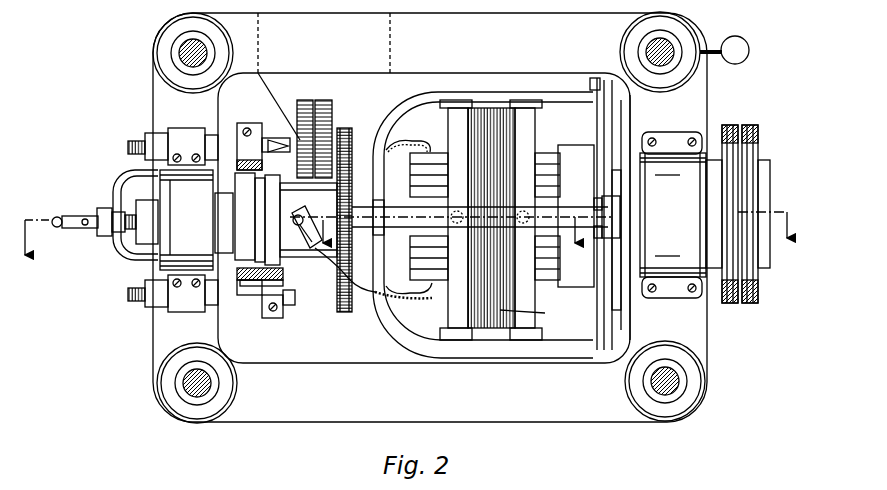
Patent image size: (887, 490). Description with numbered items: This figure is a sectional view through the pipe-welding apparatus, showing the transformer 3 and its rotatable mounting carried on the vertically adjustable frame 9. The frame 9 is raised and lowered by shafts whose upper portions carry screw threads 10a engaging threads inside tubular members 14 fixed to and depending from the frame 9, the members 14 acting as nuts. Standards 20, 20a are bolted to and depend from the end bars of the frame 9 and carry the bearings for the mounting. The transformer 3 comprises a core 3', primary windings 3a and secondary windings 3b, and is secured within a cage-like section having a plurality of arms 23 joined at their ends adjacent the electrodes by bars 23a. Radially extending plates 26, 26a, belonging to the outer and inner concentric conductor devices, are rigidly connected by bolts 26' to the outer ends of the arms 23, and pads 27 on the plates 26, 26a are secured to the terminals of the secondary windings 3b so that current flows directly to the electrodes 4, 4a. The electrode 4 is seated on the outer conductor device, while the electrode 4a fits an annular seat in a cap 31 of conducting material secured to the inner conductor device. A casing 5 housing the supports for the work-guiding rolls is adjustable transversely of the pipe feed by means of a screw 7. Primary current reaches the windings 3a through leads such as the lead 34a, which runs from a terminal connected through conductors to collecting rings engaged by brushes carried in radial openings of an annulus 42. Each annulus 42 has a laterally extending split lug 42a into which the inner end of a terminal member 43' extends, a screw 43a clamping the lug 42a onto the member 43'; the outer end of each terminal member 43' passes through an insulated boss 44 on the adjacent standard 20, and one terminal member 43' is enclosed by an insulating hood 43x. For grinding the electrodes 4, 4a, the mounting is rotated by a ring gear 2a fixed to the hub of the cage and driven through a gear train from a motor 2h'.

The frame 9 is at (520, 422).
The screw threads 10a is at (186, 50).
The tubular members 14 is at (212, 50).
The arms 23 is at (492, 90).
The bars 23a is at (603, 355).
The transformer 3 is at (517, 220).
The core 3' is at (532, 314).
The primary windings 3a is at (428, 152).
The secondary windings 3b is at (473, 281).
The screw 7 is at (541, 233).
The bolts 26' is at (590, 214).
The plate 26a is at (628, 310).
The plate 26 is at (664, 215).
The pads 27 is at (622, 258).
The standard 20a is at (660, 162).
The cap 31 is at (757, 268).
The electrode 4 is at (731, 126).
The electrode 4a is at (751, 126).
The motor 2h' is at (110, 215).
The casing 5 is at (170, 224).
The standard 20 is at (172, 250).
The boss 44 is at (181, 135).
The terminal member 43' is at (248, 249).
The hood 43x is at (222, 338).
The ring gear 2a is at (344, 315).
The lug 42a is at (239, 130).
The annulus 42 is at (252, 282).
The screw 43a is at (262, 302).
The lead 34a is at (350, 284).